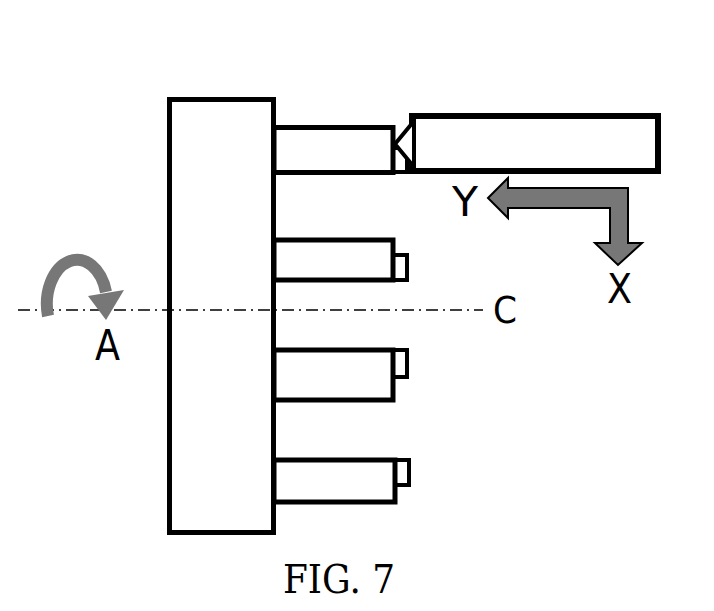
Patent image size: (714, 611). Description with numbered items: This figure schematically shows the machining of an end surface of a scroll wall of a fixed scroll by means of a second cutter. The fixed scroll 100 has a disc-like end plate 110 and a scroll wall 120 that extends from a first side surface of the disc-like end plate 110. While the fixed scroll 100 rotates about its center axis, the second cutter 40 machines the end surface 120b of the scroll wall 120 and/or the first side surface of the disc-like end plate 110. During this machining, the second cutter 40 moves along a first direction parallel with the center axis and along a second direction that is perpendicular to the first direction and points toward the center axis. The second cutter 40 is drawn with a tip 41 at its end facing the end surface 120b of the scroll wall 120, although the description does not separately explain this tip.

The fixed scroll 100 is at (140, 478).
The disc-like end plate 110 is at (195, 215).
The scroll wall 120 is at (332, 145).
The end surface 120b is at (395, 388).
The second cutter 40 is at (537, 128).
The tip of workpiece 41 is at (407, 125).